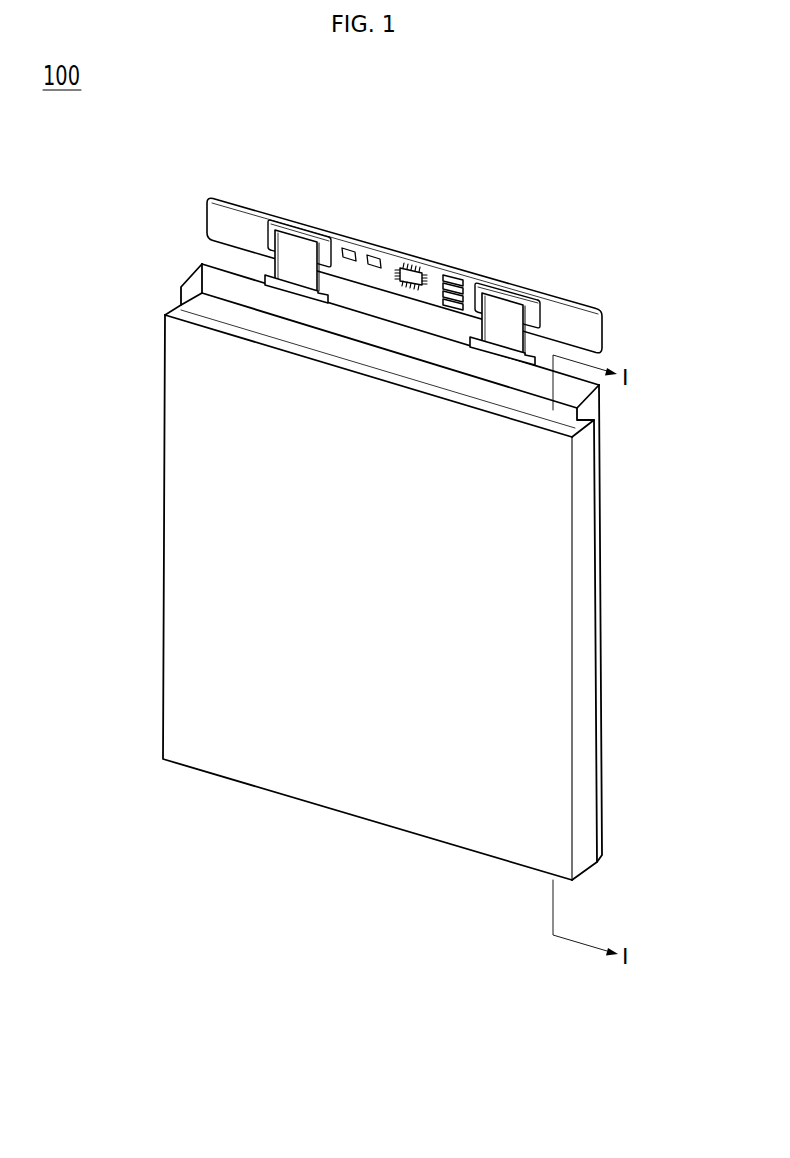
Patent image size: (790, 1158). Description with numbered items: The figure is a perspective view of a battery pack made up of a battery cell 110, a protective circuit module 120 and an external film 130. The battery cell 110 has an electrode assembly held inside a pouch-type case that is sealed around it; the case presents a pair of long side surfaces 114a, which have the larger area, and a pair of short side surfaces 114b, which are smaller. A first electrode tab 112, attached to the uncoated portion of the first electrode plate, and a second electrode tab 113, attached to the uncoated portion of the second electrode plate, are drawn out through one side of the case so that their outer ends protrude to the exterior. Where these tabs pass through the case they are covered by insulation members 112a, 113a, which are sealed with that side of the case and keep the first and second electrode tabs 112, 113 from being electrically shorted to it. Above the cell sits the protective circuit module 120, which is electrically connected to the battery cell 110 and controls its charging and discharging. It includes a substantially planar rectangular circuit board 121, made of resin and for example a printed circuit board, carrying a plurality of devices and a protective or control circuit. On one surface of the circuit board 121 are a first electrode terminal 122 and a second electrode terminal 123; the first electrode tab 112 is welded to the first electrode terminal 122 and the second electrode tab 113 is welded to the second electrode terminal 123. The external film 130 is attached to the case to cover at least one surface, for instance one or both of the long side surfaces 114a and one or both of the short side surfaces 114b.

The battery cell 110 is at (196, 257).
The first electrode tab 112 is at (297, 246).
The insulation member 112a is at (262, 276).
The second electrode tab 113 is at (505, 311).
The insulation member 113a is at (468, 336).
The long side surfaces 114a is at (237, 280).
The short side surfaces 114b is at (187, 273).
The protective circuit module 120 is at (200, 187).
The circuit board 121 is at (595, 332).
The first electrode terminal 122 is at (325, 248).
The second electrode terminal 123 is at (540, 290).
The external film 130 is at (182, 549).